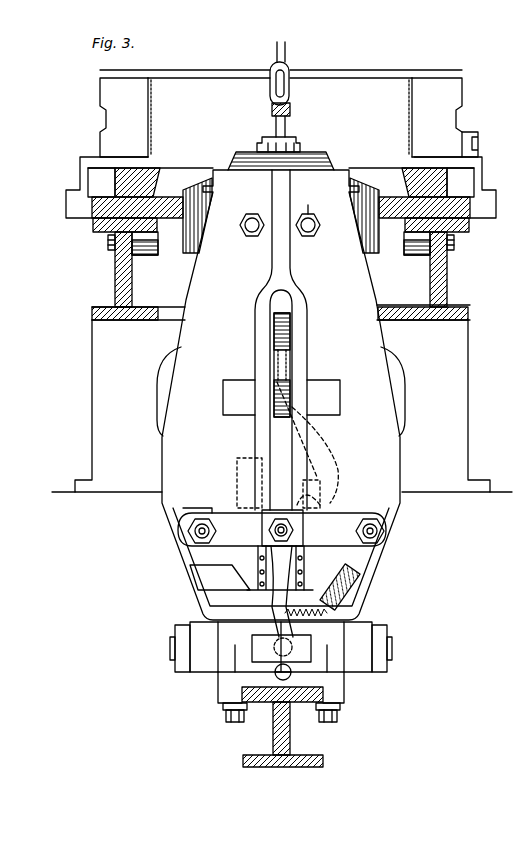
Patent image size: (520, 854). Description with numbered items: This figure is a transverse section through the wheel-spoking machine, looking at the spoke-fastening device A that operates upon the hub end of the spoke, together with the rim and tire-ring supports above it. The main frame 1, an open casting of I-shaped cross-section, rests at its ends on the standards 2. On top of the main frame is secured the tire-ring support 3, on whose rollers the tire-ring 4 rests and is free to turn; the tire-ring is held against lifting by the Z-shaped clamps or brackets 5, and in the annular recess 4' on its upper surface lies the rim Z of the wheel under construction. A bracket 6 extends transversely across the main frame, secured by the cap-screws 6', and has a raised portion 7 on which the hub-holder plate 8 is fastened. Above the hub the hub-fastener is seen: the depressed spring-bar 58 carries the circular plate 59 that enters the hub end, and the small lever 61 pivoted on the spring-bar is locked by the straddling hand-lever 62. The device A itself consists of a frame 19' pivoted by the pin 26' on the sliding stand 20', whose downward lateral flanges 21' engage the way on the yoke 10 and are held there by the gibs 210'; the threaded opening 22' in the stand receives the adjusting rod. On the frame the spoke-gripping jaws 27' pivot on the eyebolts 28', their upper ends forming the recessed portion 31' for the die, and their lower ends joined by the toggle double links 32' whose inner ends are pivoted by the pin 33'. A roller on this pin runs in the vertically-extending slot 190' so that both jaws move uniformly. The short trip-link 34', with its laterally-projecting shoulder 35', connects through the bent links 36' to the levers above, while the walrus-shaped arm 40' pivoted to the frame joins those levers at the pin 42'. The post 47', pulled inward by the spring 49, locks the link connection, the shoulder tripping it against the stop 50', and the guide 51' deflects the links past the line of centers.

The rim Z is at (108, 103).
The spoke-fastening device A is at (342, 45).
The hand-lever 62 is at (287, 72).
The small lever 61 is at (278, 82).
The circular plate 59 is at (290, 141).
The spring-bar 58 is at (271, 139).
The annular recess 4' is at (280, 120).
The Z-shaped clamps or brackets 5 is at (82, 173).
The tire-ring 4 is at (281, 182).
The tire-ring support 3 is at (66, 207).
The hub-holder plate 8 is at (221, 187).
The raised portion 7 is at (341, 192).
The main frame 1 is at (428, 267).
The bracket 6 is at (301, 246).
The cap-screws 6' is at (263, 244).
The standards 2 is at (282, 398).
The frame 19' is at (281, 395).
The eyebolts 28' is at (278, 210).
The recessed portion 31' is at (311, 194).
The walrus-shaped link or arm 40' is at (308, 365).
The pin 42' is at (298, 397).
The bent links 36' is at (316, 443).
The stop 50' is at (245, 490).
The short trip-link 34' is at (302, 513).
The spoke-gripping jaws 27' is at (282, 515).
The double links 32' is at (286, 532).
The pin or bolt 33' is at (270, 568).
The laterally-projecting shoulder 35' is at (315, 568).
The vertically-extending slot 190' is at (226, 578).
The post 47' is at (266, 591).
The spring 49 is at (315, 598).
The guide 51' is at (347, 587).
The pin 26' is at (277, 648).
The sliding stand 20' is at (235, 647).
The threaded opening 22' is at (312, 651).
The lateral flanges 21' is at (264, 688).
The gibs 210' is at (283, 714).
The yoke 10 is at (283, 767).